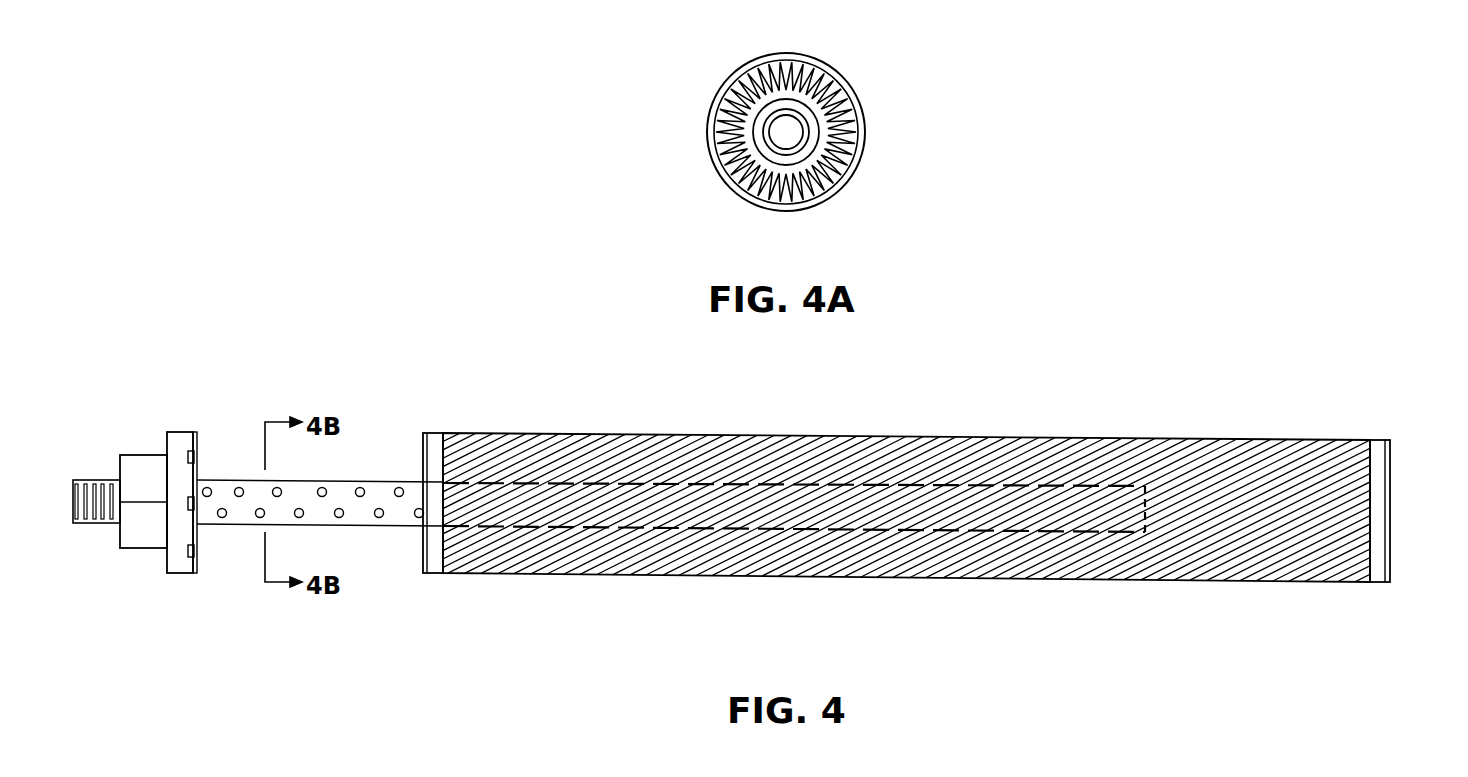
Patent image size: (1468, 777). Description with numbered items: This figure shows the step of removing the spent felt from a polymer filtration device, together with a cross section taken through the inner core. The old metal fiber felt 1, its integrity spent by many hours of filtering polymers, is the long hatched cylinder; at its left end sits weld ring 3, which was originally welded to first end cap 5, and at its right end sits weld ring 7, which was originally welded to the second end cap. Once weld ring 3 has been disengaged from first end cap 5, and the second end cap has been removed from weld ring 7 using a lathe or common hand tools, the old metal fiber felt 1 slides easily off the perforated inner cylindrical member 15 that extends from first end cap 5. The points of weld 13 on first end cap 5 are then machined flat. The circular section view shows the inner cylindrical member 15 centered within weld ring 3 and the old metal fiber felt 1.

In FIG. 4A, the old metal fiber felt 1 is at (748, 90).
In FIG. 4, the old metal fiber felt 1 is at (612, 433).
In FIG. 4A, the weld ring 3 is at (840, 88).
In FIG. 4, the weld ring 3 is at (436, 450).
In FIG. 4, the first end cap 5 is at (133, 455).
In FIG. 4, the weld ring 7 is at (1388, 442).
In FIG. 4, the points of weld 13 is at (190, 552).
In FIG. 4A, the inner cylindrical member 15 is at (806, 141).
In FIG. 4, the inner cylindrical member 15 is at (245, 512).